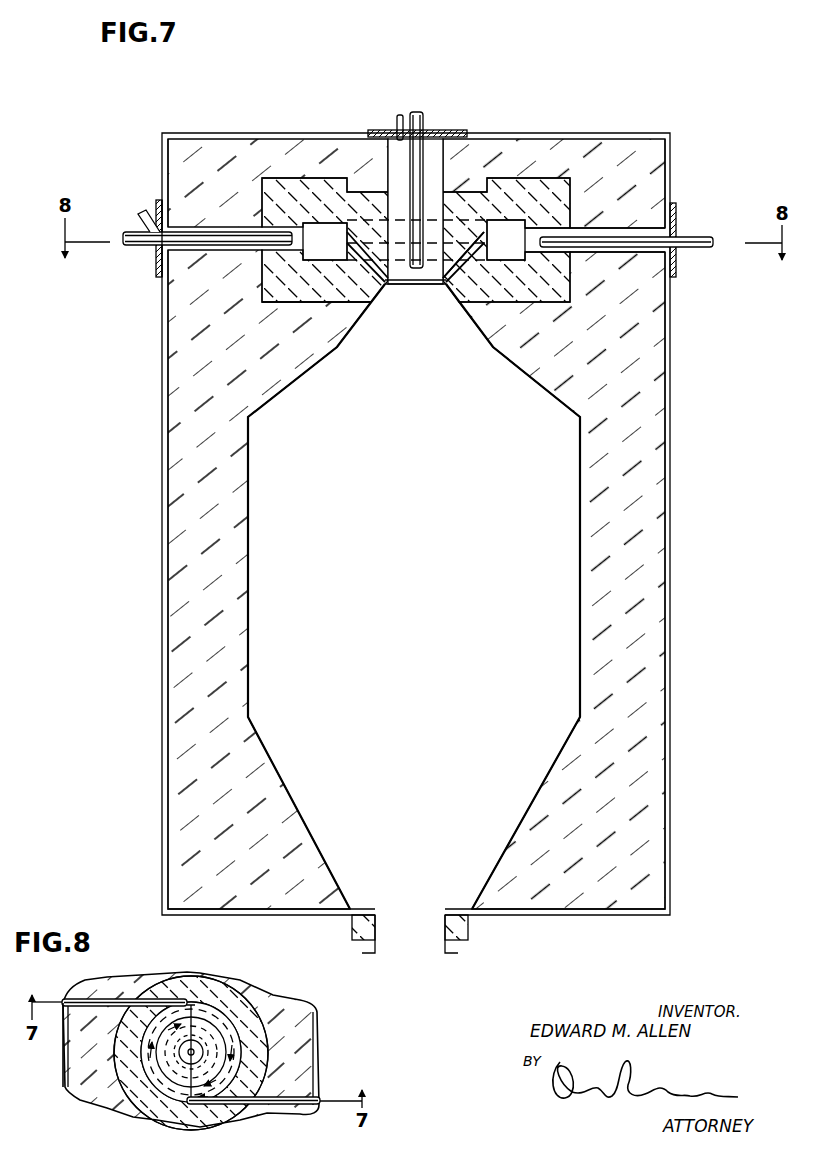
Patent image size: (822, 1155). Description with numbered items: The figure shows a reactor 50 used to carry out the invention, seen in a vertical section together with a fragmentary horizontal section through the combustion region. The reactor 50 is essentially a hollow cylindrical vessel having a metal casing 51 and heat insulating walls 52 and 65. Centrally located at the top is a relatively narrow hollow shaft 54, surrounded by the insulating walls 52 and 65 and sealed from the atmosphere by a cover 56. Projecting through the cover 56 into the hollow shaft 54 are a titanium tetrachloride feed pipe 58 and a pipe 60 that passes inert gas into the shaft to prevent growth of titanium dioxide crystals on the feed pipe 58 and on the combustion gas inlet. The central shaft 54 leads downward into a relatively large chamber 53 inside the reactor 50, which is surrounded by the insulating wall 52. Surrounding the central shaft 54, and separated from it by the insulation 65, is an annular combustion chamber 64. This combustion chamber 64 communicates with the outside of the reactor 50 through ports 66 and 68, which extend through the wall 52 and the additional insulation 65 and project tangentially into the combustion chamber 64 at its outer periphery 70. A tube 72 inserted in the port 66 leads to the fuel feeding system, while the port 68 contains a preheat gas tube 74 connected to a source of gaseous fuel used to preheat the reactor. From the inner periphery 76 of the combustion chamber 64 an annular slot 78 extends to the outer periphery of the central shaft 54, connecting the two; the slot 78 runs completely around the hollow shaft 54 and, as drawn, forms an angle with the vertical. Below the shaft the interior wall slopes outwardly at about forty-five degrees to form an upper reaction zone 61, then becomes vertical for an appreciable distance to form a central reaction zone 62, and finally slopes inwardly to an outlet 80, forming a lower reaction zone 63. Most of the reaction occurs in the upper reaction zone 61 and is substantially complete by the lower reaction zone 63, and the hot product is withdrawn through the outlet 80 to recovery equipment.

In FIG. 7, the reactor 50 is at (165, 358).
In FIG. 7, the metal casing 51 is at (168, 388).
In FIG. 7, the heat insulating wall 52 is at (178, 428).
In FIG. 7, the chamber 53 is at (265, 467).
In FIG. 7, the hollow shaft 54 is at (398, 267).
In FIG. 7, the cover 56 is at (447, 129).
In FIG. 7, the titanium tetrachloride feed pipe 58 is at (423, 113).
In FIG. 7, the pipe 60 is at (396, 122).
In FIG. 7, the upper reaction zone 61 is at (408, 336).
In FIG. 7, the central reaction zone 62 is at (414, 591).
In FIG. 7, the lower reaction zone 63 is at (404, 863).
In FIG. 7, the annular combustion chamber 64 is at (325, 241).
In FIG. 8, the annular combustion chamber 64 is at (237, 1065).
In FIG. 7, the insulation 65 is at (262, 297).
In FIG. 8, the insulation 65 is at (120, 1077).
In FIG. 7, the port 66 is at (188, 232).
In FIG. 8, the port 66 is at (90, 997).
In FIG. 7, the port 68 is at (620, 232).
In FIG. 7, the outer periphery 70 is at (293, 227).
In FIG. 7, the tube 72 is at (212, 240).
In FIG. 8, the tube 72 is at (65, 1010).
In FIG. 7, the preheat gas tube 74 is at (693, 236).
In FIG. 8, the preheat gas tube 74 is at (306, 1106).
In FIG. 7, the inner periphery 76 is at (355, 178).
In FIG. 7, the annular slot 78 is at (465, 268).
In FIG. 8, the annular slot 78 is at (197, 1036).
In FIG. 7, the outlet 80 is at (410, 928).